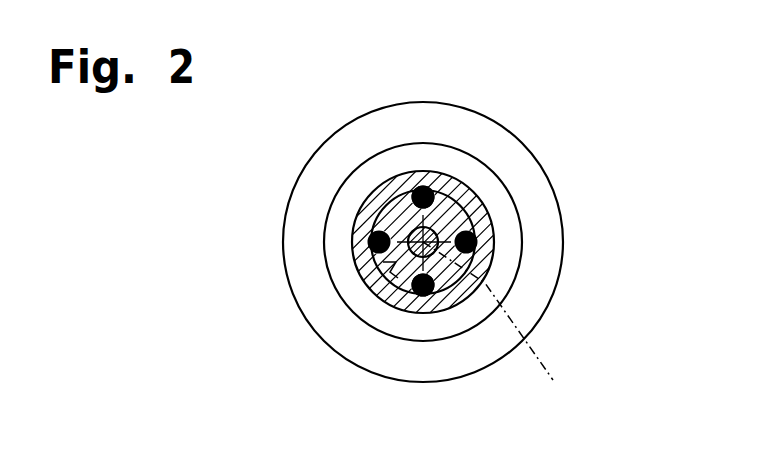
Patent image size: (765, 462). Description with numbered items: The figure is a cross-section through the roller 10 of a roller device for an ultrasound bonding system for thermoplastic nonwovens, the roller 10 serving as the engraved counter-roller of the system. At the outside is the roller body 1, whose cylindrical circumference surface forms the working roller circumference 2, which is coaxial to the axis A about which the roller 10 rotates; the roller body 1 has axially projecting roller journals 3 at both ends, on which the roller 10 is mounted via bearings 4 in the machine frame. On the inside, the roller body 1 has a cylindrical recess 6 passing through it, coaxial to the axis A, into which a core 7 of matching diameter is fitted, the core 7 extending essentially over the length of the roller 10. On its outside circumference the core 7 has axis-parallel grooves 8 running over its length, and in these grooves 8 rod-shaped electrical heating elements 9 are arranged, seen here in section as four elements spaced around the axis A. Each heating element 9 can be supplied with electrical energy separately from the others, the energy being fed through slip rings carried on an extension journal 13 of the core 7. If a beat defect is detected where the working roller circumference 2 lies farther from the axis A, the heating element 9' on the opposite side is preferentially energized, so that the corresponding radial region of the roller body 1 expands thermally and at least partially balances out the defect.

The roller body 1 is at (337, 145).
The working roller circumference 2 is at (286, 213).
The roller journal 3 is at (332, 294).
The bearing 4 is at (335, 238).
The cylindrical recess 6 is at (363, 263).
The core 7 is at (392, 271).
The axis-parallel groove 8 is at (447, 196).
The electrical heating element 9 is at (398, 122).
The heating element 9' is at (398, 361).
The roller 10 is at (523, 128).
The extension journal 13 is at (467, 231).
The axis A is at (502, 321).